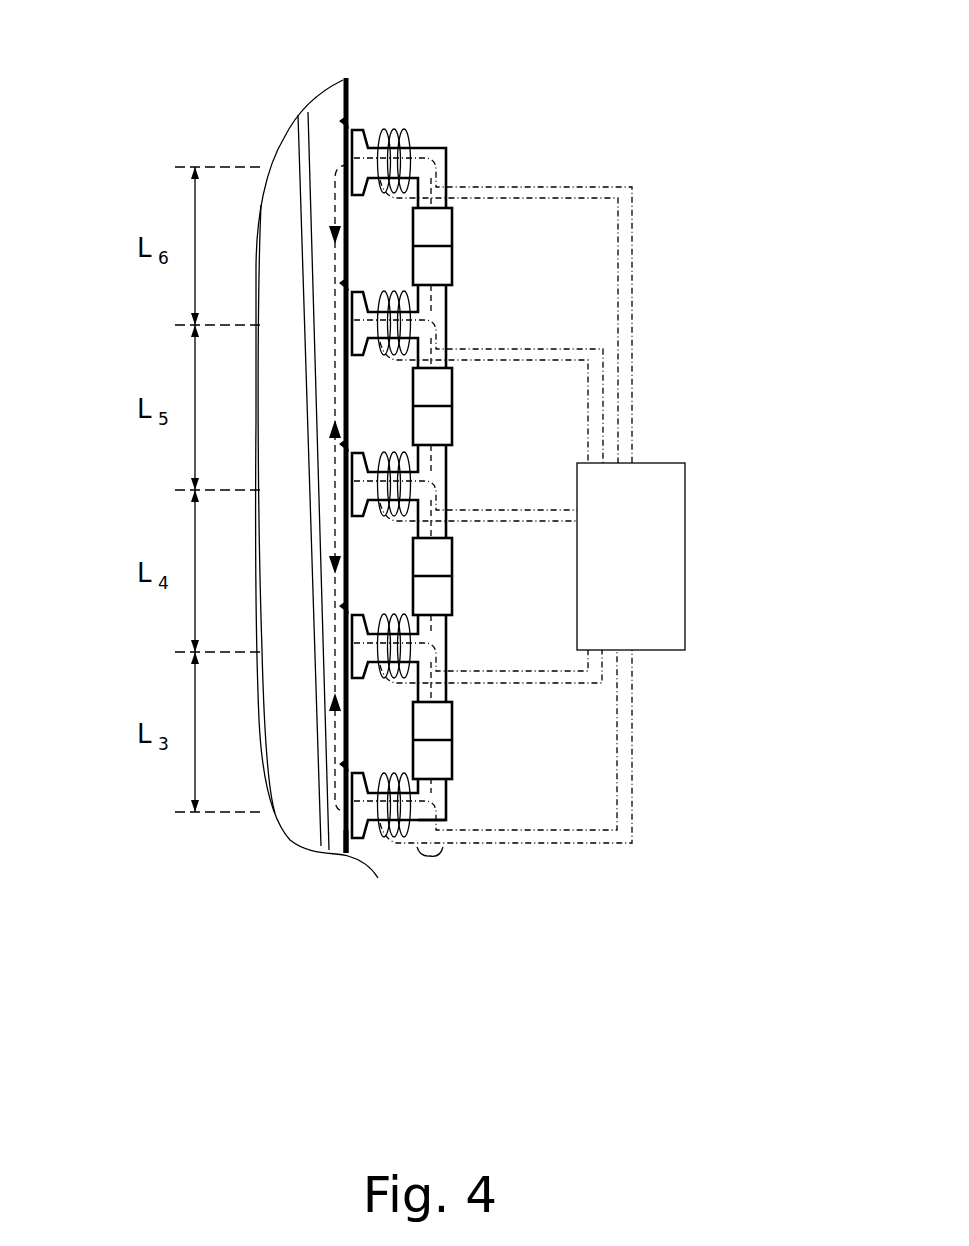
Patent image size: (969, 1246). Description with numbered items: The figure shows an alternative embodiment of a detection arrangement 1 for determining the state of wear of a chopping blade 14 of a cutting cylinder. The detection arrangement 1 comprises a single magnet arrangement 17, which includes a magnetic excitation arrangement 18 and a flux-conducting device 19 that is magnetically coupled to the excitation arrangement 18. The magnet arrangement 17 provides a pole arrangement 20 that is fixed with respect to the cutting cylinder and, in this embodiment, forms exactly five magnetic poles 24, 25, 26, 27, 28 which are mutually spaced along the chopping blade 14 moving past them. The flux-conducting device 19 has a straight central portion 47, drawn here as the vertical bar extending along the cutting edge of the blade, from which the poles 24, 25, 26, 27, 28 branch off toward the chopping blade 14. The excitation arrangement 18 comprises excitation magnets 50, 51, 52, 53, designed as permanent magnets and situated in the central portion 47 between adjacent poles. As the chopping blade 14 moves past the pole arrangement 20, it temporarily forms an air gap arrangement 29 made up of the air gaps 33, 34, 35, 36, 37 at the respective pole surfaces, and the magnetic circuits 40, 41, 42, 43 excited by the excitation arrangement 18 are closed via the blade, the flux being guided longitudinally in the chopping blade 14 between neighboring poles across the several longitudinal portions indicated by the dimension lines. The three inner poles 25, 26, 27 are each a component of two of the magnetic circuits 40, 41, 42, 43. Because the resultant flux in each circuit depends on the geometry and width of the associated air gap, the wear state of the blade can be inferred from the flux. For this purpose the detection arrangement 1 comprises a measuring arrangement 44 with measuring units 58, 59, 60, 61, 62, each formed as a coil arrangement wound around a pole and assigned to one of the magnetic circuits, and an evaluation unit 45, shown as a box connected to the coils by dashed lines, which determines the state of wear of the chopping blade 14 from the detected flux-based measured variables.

The detection arrangement 1 is at (232, 147).
The chopping blade 14 is at (337, 722).
The magnet arrangement 17 is at (465, 802).
The magnetic excitation arrangement 18 is at (453, 730).
The flux-conducting device 19 is at (448, 148).
The pole arrangement 20 is at (378, 860).
The magnetic pole 24 is at (372, 781).
The magnetic pole 25 is at (372, 622).
The magnetic pole 26 is at (372, 461).
The magnetic pole 27 is at (372, 300).
The magnetic pole 28 is at (363, 135).
The air gap arrangement 29 is at (347, 860).
The air gap 33 is at (349, 771).
The air gap 34 is at (349, 613).
The air gap 35 is at (349, 451).
The air gap 36 is at (349, 290).
The air gap 37 is at (349, 128).
The magnetic circuit 40 is at (455, 789).
The magnetic circuit 41 is at (455, 631).
The magnetic circuit 42 is at (455, 467).
The magnetic circuit 43 is at (455, 303).
The measuring arrangement 44 is at (398, 860).
The evaluation unit 45 is at (631, 556).
The central portion 47 is at (432, 862).
The excitation magnet 50 is at (455, 752).
The excitation magnet 51 is at (455, 600).
The excitation magnet 52 is at (455, 432).
The excitation magnet 53 is at (455, 268).
The measuring unit 58 is at (347, 815).
The measuring unit 59 is at (377, 645).
The measuring unit 60 is at (377, 485).
The measuring unit 61 is at (377, 323).
The measuring unit 62 is at (377, 163).